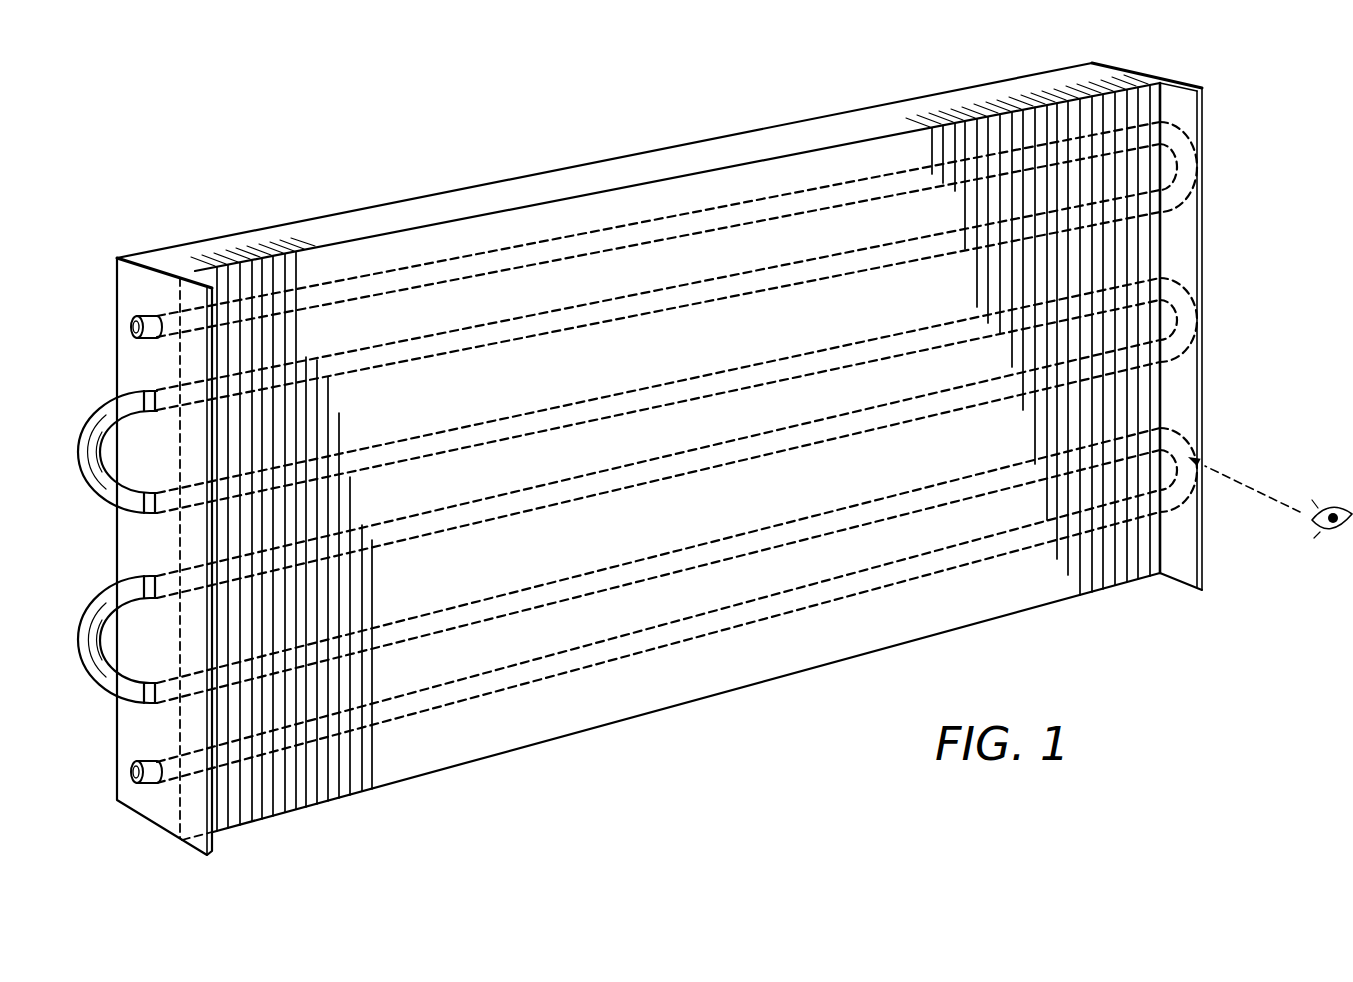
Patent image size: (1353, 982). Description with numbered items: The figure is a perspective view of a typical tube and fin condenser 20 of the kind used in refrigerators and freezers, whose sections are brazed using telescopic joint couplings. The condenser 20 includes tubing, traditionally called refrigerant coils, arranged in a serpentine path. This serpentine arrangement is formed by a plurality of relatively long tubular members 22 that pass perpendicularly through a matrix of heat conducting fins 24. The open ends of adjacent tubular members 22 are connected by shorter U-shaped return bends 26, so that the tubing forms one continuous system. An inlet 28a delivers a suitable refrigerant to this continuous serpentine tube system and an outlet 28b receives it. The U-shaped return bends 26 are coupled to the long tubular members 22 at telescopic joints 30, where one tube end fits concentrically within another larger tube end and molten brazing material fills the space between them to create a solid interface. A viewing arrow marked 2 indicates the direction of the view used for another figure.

The condenser 20 is at (488, 112).
The tubular members 22 is at (363, 275).
The heat conducting fins 24 is at (989, 94).
The U-shaped return bends 26 is at (105, 418).
The inlet 28a is at (140, 322).
The outlet 28b is at (120, 783).
The telescopic joints 30 is at (145, 576).
The view line for FIG. 2 is at (1270, 497).